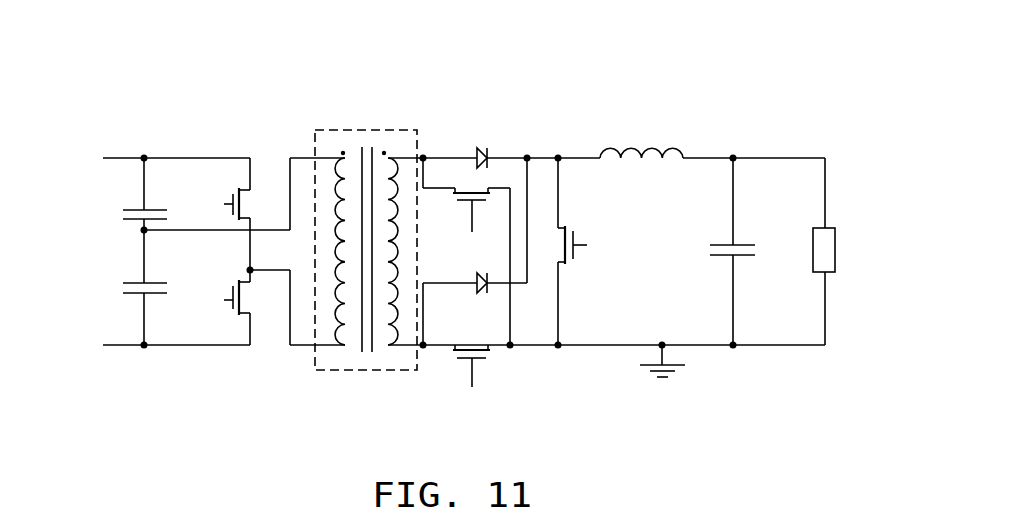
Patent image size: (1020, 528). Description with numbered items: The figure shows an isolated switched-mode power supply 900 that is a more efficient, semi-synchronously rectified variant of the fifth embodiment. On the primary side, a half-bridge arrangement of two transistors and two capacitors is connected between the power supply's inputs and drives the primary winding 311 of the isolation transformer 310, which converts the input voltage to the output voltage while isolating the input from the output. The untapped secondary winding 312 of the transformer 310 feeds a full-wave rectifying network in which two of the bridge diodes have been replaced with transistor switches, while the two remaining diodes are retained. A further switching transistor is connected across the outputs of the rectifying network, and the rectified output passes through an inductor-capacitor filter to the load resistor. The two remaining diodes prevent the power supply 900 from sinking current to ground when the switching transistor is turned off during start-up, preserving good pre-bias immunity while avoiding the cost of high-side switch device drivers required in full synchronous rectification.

The isolated SMPS 900 is at (660, 82).
The isolation transformer 310 is at (362, 130).
The primary winding 311 is at (333, 360).
The secondary winding 312 is at (392, 360).